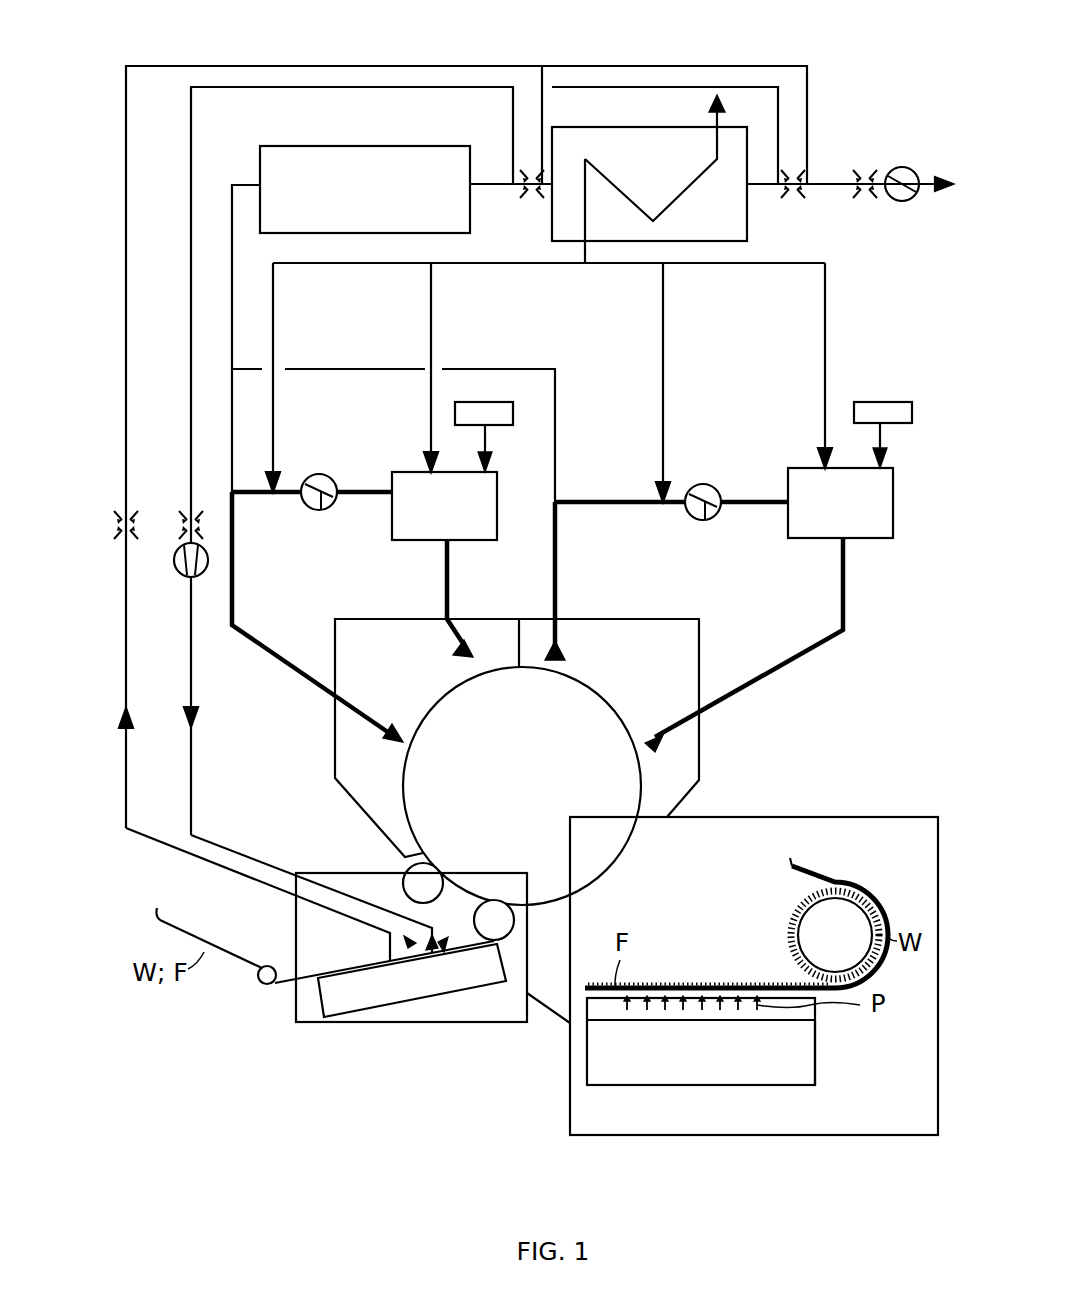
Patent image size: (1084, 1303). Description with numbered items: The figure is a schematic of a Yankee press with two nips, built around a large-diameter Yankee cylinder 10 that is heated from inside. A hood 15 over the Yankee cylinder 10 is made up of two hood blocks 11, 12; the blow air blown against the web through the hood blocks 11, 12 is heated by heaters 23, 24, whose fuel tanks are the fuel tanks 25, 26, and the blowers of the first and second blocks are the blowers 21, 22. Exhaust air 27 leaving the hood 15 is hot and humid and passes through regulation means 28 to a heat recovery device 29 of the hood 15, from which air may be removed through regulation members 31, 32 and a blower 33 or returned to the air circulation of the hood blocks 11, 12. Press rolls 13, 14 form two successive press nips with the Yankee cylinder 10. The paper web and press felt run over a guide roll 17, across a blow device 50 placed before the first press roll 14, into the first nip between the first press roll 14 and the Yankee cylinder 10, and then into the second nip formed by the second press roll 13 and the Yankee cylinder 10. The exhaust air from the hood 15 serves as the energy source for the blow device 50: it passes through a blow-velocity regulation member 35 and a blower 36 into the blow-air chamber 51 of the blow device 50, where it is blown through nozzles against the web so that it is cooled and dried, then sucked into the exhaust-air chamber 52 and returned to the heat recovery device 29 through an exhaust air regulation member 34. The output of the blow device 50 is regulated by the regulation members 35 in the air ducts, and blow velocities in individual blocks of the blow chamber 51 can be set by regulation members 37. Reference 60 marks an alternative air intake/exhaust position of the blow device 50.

The Yankee cylinder 10 is at (627, 775).
The first hood block 11 is at (398, 632).
The second hood block 12 is at (645, 628).
The second press roll 13 is at (400, 878).
The first press roll 14 is at (507, 925).
The hood 15 is at (516, 641).
The guide roll 17 is at (266, 966).
The blower 21 is at (319, 510).
The blower 22 is at (699, 510).
The heater 23 is at (493, 531).
The heater 24 is at (915, 531).
The fuel tank 25 is at (498, 404).
The fuel tank 26 is at (915, 402).
The exhaust air 27 is at (470, 215).
The regulation means 28 is at (535, 204).
The heat recovery device 29 is at (742, 215).
The regulation member 31 is at (798, 206).
The regulation member 32 is at (865, 206).
The blower 33 is at (908, 199).
The exhaust air regulation member 34 is at (112, 527).
The blow-velocity regulation member 35 is at (188, 521).
The blower 36 is at (182, 576).
The regulation member 37 is at (447, 938).
The blow device 50 is at (340, 1002).
The blow-air chamber 51 is at (590, 1022).
The exhaust-air chamber 52 is at (805, 1053).
The alternative air intake/exhaust position 60 is at (676, 87).